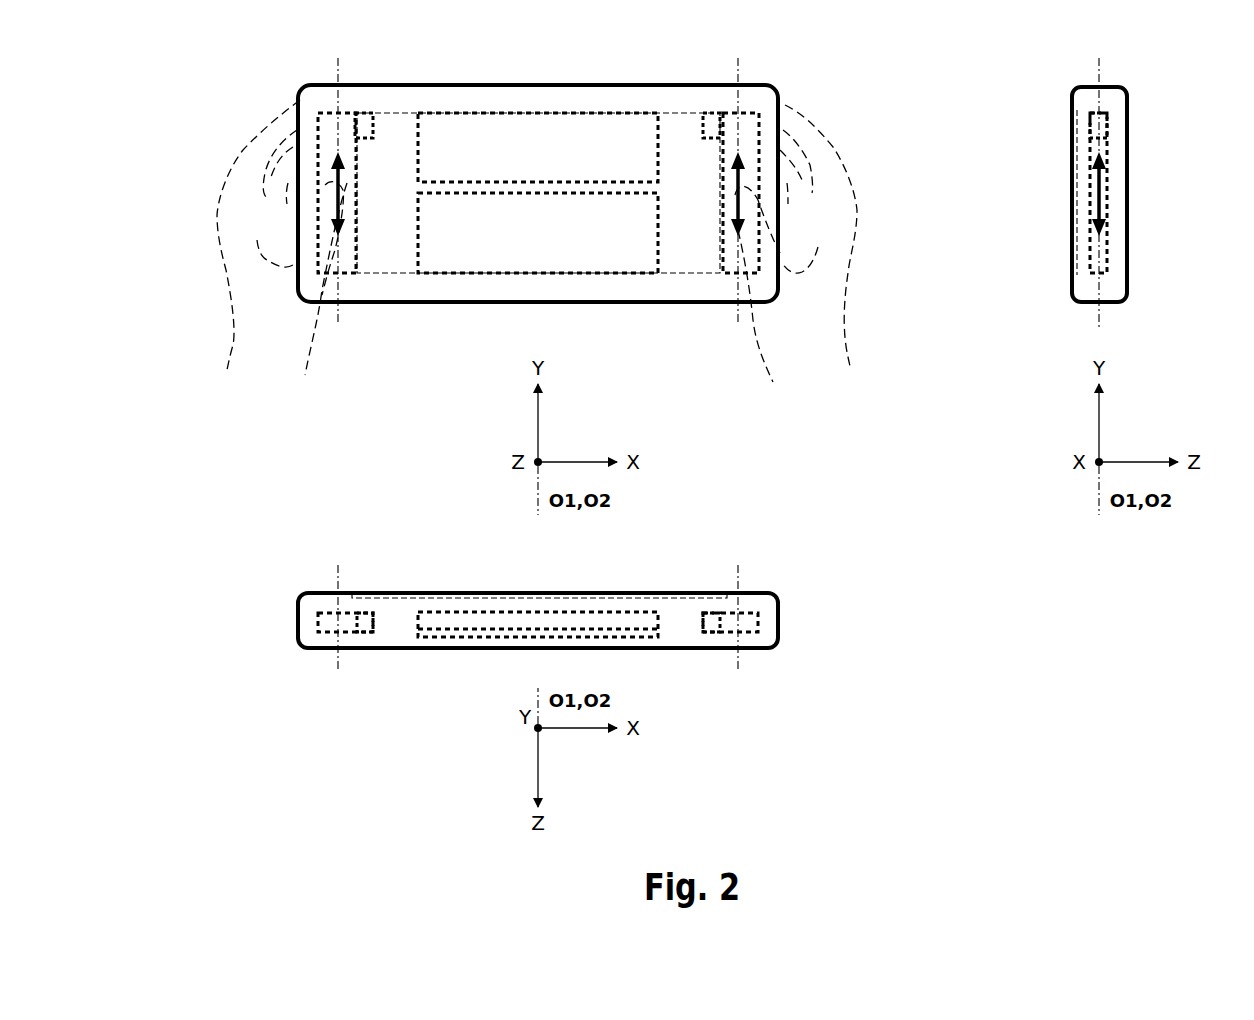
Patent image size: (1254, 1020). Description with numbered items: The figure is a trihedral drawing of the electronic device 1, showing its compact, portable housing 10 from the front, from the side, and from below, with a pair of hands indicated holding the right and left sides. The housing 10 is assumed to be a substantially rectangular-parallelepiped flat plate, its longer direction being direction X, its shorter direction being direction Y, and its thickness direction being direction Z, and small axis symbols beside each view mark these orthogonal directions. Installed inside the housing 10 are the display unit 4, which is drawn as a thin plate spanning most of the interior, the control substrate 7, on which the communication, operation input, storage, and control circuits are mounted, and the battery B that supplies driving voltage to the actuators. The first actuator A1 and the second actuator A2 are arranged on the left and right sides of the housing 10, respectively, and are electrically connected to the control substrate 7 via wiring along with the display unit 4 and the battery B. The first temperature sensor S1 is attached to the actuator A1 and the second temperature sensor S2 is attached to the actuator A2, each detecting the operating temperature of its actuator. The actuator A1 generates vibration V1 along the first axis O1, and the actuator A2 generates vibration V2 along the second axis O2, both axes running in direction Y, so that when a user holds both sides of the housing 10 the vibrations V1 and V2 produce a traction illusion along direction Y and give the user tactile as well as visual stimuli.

The electronic device 1 is at (246, 60).
The housing 10 is at (753, 84).
The display unit 4 is at (392, 268).
The control substrate 7 is at (470, 265).
The first actuator A1 is at (325, 125).
The second actuator A2 is at (751, 125).
The first temperature sensor S1 is at (365, 122).
The second temperature sensor S2 is at (712, 122).
The battery B is at (538, 125).
The first axis O1 is at (338, 353).
The second axis O2 is at (918, 353).
The vibration V1 is at (355, 194).
The vibration V2 is at (900, 194).